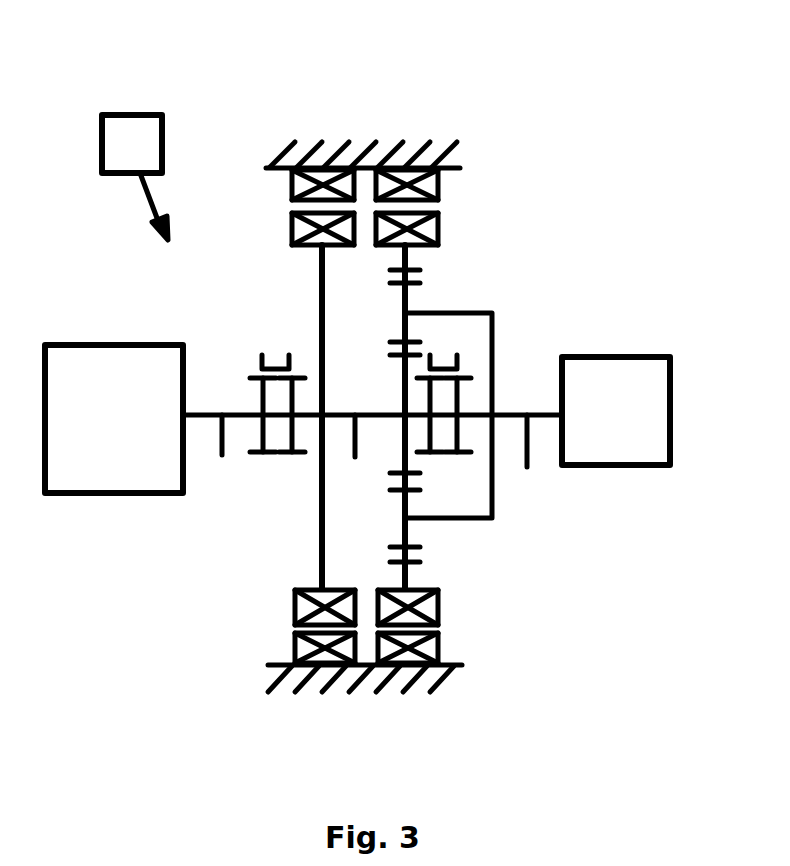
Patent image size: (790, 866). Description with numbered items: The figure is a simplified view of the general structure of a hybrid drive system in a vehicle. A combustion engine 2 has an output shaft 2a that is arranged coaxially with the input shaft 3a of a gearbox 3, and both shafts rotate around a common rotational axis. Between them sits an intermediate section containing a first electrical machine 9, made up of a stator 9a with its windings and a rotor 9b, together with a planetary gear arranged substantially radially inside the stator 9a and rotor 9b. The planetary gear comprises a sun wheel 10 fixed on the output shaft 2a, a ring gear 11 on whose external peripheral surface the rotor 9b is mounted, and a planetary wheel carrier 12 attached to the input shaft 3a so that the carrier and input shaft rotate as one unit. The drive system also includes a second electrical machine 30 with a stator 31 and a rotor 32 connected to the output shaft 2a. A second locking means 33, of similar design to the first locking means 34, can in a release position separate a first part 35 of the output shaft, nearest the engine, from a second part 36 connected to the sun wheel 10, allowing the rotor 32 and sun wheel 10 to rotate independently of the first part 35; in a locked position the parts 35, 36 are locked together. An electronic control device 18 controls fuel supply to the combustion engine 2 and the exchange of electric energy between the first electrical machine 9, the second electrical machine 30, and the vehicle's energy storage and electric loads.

The combustion engine 2 is at (95, 497).
The output shaft of the combustion engine 2a is at (358, 459).
The gearbox 3 is at (612, 357).
The input shaft of the gearbox 3a is at (530, 459).
The first electrical machine 9 is at (482, 216).
The stator 9a is at (438, 192).
The rotor 9b is at (438, 222).
The sun wheel 10 is at (405, 413).
The ring gear 11 is at (421, 260).
The planetary wheel carrier 12 is at (495, 389).
The electronic control device 18 is at (126, 128).
The second electrical machine 30 is at (272, 206).
The stator 31 is at (294, 645).
The rotor 32 is at (294, 603).
The second locking means 33 is at (272, 360).
The first locking means 34 is at (448, 355).
The first part of the combustion engine's output shaft 35 is at (223, 454).
The second part of the combustion engine's output shaft 36 is at (300, 453).